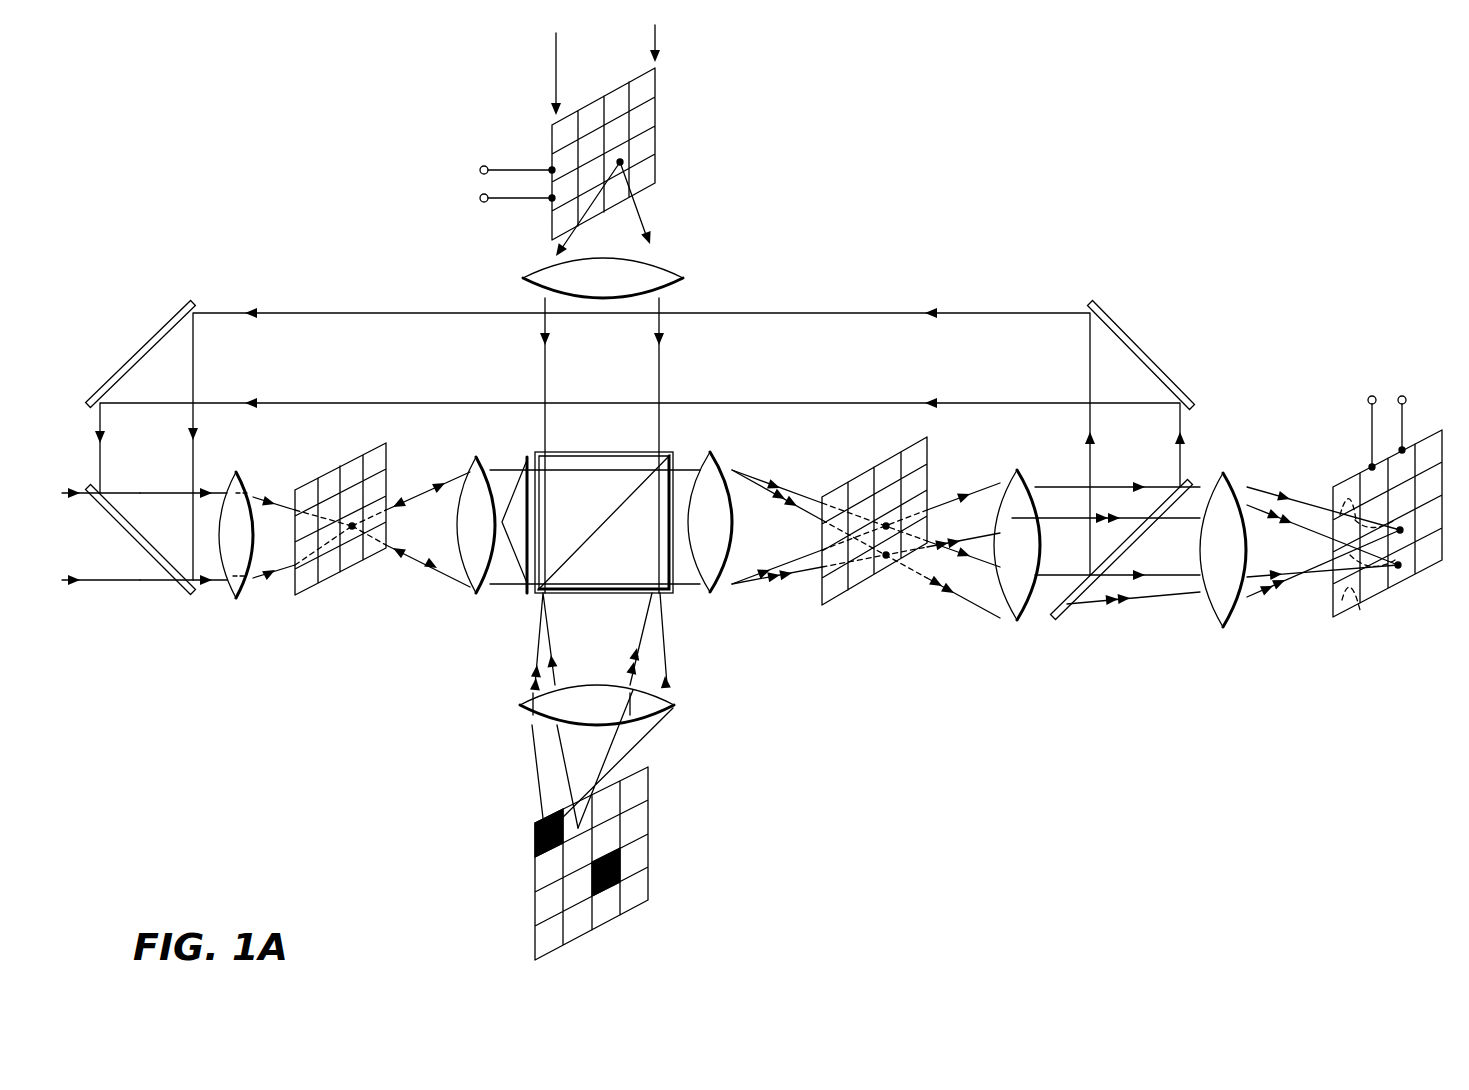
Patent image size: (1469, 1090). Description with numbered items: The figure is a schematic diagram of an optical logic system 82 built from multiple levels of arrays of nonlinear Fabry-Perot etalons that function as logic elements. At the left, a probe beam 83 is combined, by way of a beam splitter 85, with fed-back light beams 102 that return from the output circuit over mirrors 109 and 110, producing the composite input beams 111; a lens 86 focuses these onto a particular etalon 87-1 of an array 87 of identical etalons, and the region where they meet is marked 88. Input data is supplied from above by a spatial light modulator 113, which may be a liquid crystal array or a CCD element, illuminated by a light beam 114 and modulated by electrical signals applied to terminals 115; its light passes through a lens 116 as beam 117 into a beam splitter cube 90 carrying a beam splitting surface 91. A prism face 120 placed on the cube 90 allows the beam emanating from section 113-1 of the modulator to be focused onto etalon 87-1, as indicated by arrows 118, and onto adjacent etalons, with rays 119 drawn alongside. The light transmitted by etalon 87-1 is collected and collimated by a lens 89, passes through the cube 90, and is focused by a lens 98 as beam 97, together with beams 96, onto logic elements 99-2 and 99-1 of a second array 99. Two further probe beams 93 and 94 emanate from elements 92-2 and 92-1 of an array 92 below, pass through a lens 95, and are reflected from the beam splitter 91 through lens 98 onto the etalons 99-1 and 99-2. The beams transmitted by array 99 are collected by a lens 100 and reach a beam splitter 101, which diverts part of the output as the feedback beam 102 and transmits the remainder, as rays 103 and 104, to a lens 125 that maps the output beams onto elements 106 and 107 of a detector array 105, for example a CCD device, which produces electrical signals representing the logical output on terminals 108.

The optical logic system 82 is at (412, 705).
The probe beam 83 is at (82, 486).
The beam splitter 85 is at (150, 512).
The lens 86 is at (238, 590).
The array 87 is at (306, 588).
The etalon 87-1 is at (350, 530).
The focused spot 88 is at (387, 516).
The lens 89 is at (459, 576).
The beam splitter 90 is at (603, 444).
The beam splitter 91 is at (618, 504).
The array 92 is at (522, 908).
The element 92-1 is at (588, 825).
The element 92-2 is at (536, 843).
The probe beam 93 is at (538, 756).
The probe beam 94 is at (648, 746).
The lens 95 is at (674, 707).
The light rays 96 is at (780, 508).
The subject beam 97 is at (776, 486).
The lens 98 is at (700, 592).
The array 99 is at (833, 614).
The etalon 99-1 is at (886, 560).
The etalon 99-2 is at (890, 520).
The lens 100 is at (1010, 618).
The beam splitter 101 is at (1054, 616).
The feedback beam 102 is at (422, 317).
The light rays 103 is at (1263, 486).
The light rays 104 is at (1354, 484).
The detector array 105 is at (1385, 610).
The element 106 is at (1400, 532).
The element 107 is at (1398, 567).
The terminals 108 is at (1412, 392).
The mirror 109 is at (1143, 357).
The mirror 110 is at (138, 335).
The composite input beams 111 is at (140, 473).
The spatial light modulator 113 is at (670, 143).
The section 113-1 is at (623, 158).
The light beam 114 is at (620, 64).
The terminals 115 is at (478, 160).
The lens 116 is at (678, 278).
The light beam 117 is at (659, 369).
The arrows 118 is at (433, 490).
The light rays 119 is at (403, 496).
The prism face 120 is at (512, 576).
The lens 125 is at (1209, 617).